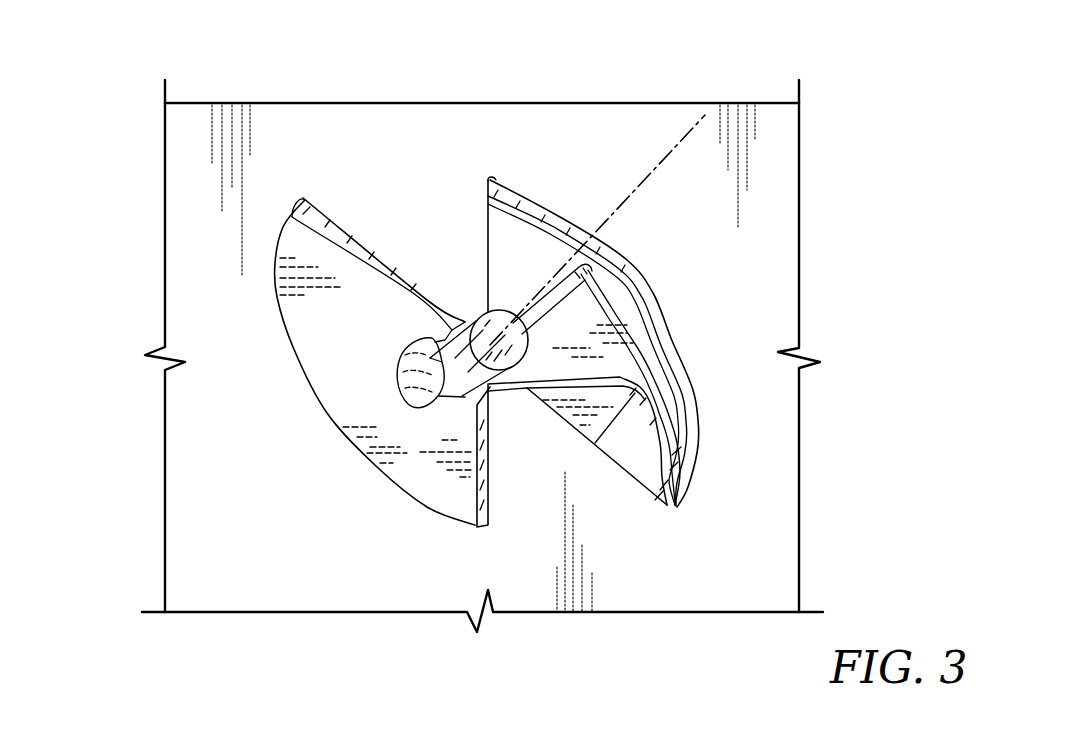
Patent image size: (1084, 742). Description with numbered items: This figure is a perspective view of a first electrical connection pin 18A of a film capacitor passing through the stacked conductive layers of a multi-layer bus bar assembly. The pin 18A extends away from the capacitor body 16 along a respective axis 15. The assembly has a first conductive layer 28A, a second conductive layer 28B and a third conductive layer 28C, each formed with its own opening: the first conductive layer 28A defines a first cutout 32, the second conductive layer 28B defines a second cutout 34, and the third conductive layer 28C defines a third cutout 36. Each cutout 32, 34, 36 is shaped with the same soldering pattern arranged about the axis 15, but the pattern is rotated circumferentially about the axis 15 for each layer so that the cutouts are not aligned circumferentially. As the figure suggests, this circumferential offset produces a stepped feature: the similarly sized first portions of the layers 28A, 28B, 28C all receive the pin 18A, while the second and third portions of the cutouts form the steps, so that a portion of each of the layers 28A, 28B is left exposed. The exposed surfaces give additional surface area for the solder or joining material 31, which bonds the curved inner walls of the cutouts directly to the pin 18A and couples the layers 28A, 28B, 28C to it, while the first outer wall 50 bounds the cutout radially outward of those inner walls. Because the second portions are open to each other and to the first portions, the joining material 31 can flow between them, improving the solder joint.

The axis 15 is at (663, 157).
The capacitor body 16 is at (356, 336).
The first electrical connection pin 18A is at (446, 330).
The first conductive layer 28A is at (615, 367).
The second conductive layer 28B is at (498, 247).
The third conductive layer 28C is at (770, 220).
The solder or joining material 31 is at (397, 363).
The first cutout 32 is at (638, 472).
The second cutout 34 is at (587, 340).
The third cutout 36 is at (512, 218).
The first outer wall 50 is at (678, 355).